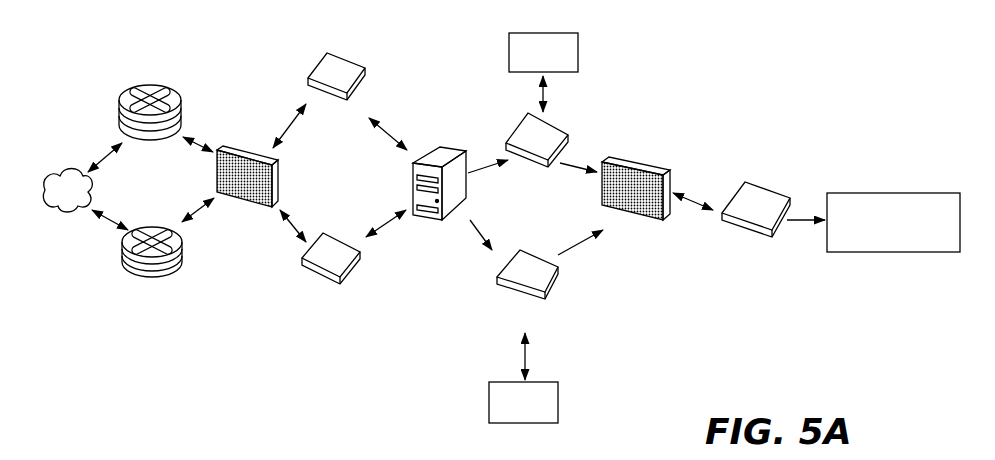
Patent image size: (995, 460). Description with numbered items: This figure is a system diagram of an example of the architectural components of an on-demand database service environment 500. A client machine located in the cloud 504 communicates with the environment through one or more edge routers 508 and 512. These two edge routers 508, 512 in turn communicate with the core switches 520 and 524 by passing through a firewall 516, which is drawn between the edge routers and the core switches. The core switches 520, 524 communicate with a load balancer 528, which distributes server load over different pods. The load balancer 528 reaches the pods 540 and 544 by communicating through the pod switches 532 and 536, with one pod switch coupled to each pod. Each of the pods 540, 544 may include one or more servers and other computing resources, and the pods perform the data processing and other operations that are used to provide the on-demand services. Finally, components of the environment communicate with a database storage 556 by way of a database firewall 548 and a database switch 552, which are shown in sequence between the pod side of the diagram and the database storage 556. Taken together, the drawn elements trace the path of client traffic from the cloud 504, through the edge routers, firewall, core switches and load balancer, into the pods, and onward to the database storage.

The on-demand database service environment 500 is at (766, 340).
The cloud 504 is at (46, 174).
The edge router 508 is at (156, 86).
The edge router 512 is at (130, 264).
The firewall 516 is at (217, 149).
The core switch 520 is at (329, 51).
The core switch 524 is at (347, 272).
The load balancer 528 is at (418, 160).
The pod switch 532 is at (560, 124).
The pod switch 536 is at (550, 290).
The pod 540 is at (580, 51).
The pod 544 is at (560, 396).
The database firewall 548 is at (636, 163).
The database switch 552 is at (748, 183).
The database storage 556 is at (845, 193).